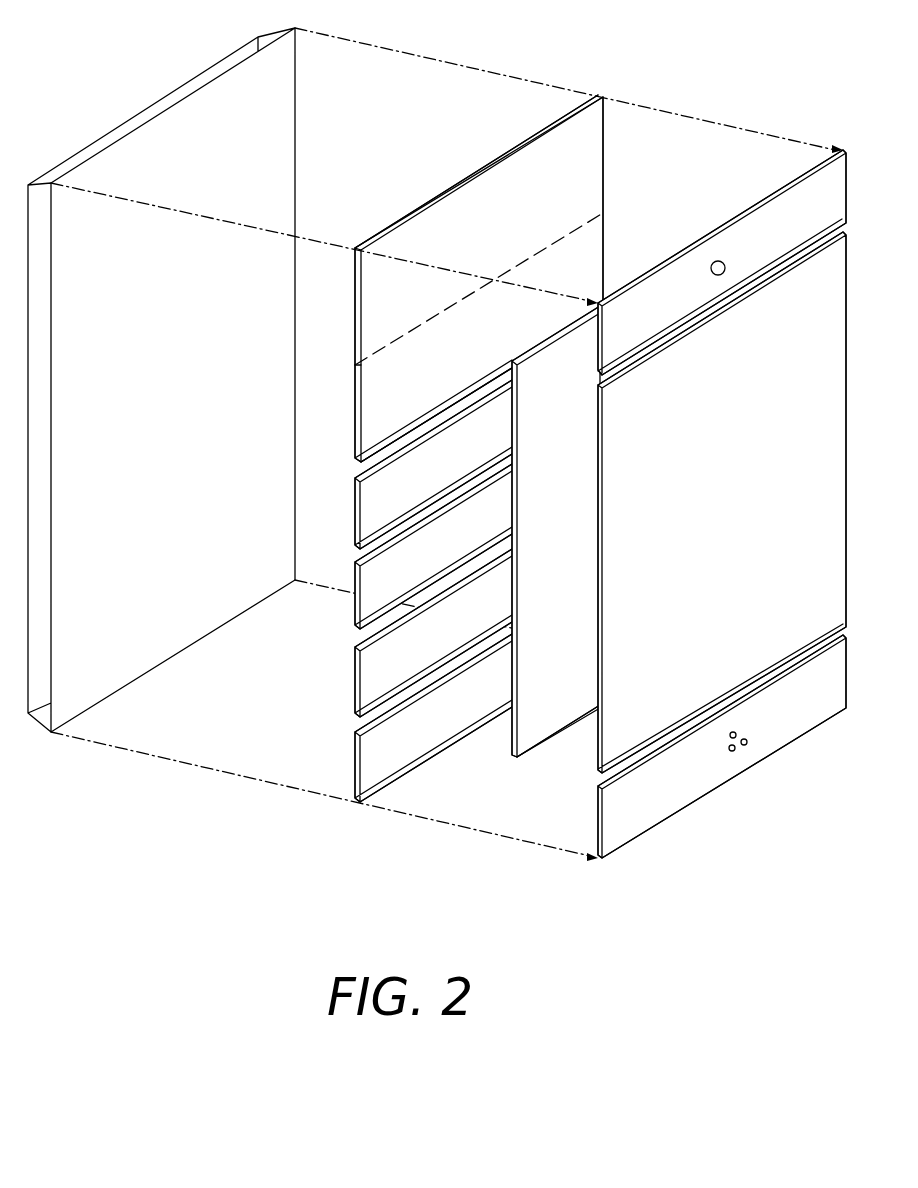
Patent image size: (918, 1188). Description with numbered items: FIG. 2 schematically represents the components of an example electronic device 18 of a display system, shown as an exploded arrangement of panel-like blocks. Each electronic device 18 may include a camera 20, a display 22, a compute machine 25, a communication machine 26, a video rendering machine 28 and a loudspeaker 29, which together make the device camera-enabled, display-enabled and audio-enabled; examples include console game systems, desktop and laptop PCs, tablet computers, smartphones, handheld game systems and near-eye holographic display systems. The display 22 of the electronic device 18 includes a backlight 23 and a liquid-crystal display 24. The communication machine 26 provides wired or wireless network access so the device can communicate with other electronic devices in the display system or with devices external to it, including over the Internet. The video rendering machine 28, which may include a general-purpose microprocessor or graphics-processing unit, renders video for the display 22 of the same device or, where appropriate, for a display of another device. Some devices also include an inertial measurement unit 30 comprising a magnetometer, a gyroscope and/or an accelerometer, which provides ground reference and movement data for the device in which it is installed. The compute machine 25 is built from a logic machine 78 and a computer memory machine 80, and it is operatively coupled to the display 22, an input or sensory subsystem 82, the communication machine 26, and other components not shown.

The electronic device 18 is at (54, 70).
The camera 20 is at (643, 341).
The display 22 is at (560, 767).
The backlight 23 is at (556, 403).
The liquid-crystal display (LCD) 24 is at (643, 425).
The compute machine 25 is at (432, 278).
The communication machine 26 is at (396, 596).
The video rendering machine 28 is at (396, 681).
The loudspeaker 29 is at (643, 821).
The inertial measurement unit (IMU) 30 is at (396, 766).
The logic machine 78 is at (396, 311).
The computer memory machine 80 is at (396, 411).
The input or sensory subsystem 82 is at (395, 515).